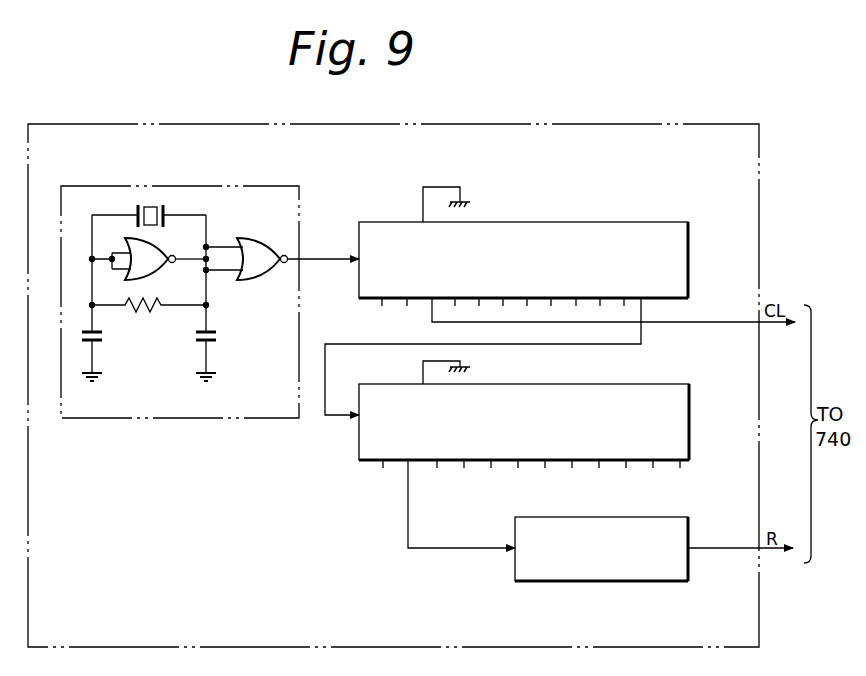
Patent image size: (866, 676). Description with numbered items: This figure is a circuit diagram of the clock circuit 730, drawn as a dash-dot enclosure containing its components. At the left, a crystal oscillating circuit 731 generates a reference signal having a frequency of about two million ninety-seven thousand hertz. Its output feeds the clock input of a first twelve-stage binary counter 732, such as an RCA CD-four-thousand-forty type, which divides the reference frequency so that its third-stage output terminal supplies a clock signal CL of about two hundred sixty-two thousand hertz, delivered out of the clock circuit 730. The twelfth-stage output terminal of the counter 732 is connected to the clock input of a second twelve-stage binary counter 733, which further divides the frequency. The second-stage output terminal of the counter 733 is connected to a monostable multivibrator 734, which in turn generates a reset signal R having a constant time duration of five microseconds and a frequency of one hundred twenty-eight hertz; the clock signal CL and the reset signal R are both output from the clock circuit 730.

The clock circuit 730 is at (663, 122).
The crystal oscillating circuit 731 is at (268, 186).
The 12-stage binary counter 732 is at (632, 222).
The 12-stage binary counter 733 is at (670, 384).
The monostable multivibrator 734 is at (662, 517).